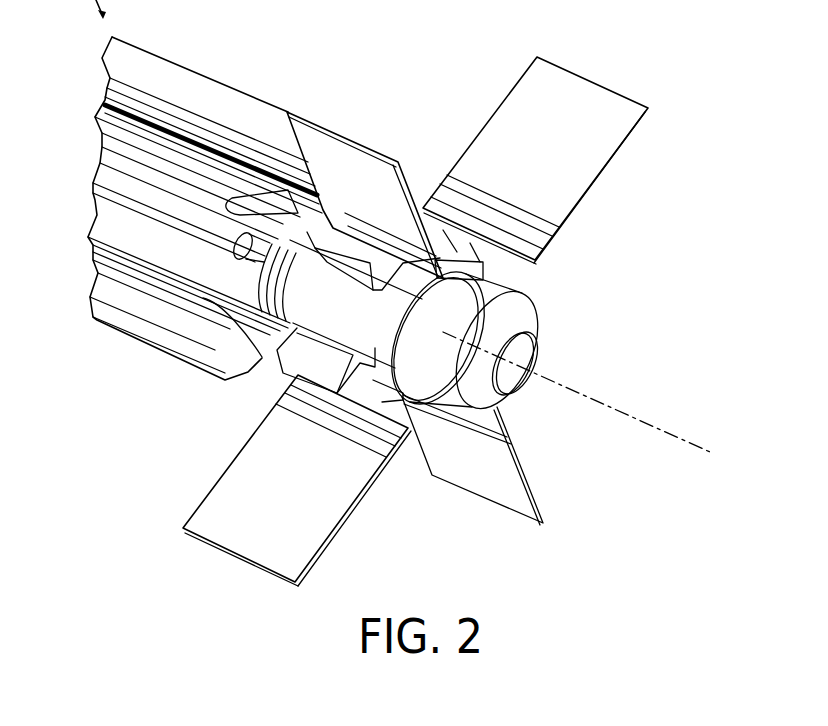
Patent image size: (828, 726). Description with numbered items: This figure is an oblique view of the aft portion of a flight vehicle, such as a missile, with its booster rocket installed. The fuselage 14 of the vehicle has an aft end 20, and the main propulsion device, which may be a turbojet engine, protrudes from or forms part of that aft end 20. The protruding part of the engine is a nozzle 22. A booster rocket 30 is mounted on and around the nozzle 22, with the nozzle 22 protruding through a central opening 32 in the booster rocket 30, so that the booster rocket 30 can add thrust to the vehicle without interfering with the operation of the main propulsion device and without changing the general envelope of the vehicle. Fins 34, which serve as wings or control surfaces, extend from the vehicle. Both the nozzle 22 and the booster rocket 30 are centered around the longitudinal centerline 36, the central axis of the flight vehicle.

The fuselage 14 is at (127, 208).
The aft end 20 is at (400, 373).
The nozzle 22 is at (528, 362).
The booster rocket 30 is at (488, 293).
The central opening 32 is at (550, 329).
The fins 34 is at (620, 97).
The longitudinal centerline 36 is at (640, 420).